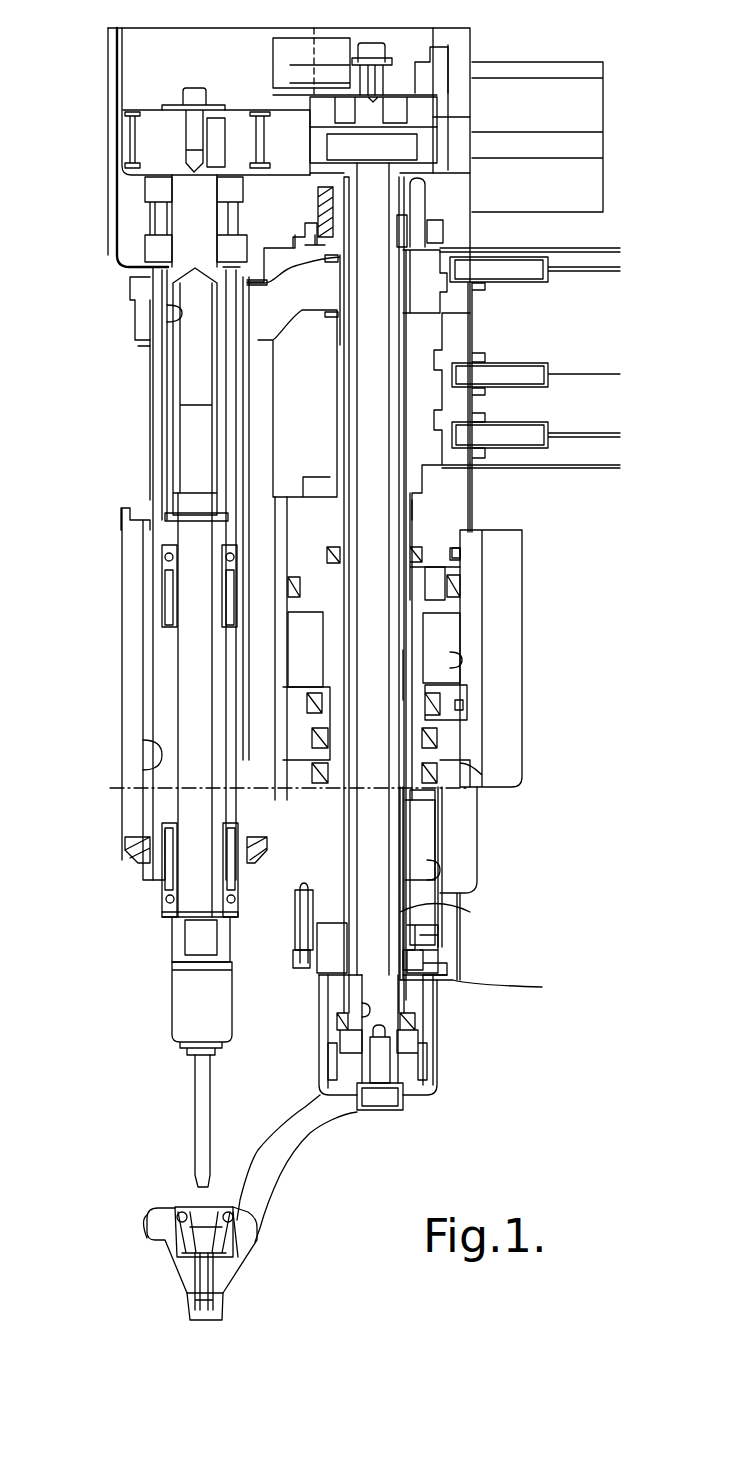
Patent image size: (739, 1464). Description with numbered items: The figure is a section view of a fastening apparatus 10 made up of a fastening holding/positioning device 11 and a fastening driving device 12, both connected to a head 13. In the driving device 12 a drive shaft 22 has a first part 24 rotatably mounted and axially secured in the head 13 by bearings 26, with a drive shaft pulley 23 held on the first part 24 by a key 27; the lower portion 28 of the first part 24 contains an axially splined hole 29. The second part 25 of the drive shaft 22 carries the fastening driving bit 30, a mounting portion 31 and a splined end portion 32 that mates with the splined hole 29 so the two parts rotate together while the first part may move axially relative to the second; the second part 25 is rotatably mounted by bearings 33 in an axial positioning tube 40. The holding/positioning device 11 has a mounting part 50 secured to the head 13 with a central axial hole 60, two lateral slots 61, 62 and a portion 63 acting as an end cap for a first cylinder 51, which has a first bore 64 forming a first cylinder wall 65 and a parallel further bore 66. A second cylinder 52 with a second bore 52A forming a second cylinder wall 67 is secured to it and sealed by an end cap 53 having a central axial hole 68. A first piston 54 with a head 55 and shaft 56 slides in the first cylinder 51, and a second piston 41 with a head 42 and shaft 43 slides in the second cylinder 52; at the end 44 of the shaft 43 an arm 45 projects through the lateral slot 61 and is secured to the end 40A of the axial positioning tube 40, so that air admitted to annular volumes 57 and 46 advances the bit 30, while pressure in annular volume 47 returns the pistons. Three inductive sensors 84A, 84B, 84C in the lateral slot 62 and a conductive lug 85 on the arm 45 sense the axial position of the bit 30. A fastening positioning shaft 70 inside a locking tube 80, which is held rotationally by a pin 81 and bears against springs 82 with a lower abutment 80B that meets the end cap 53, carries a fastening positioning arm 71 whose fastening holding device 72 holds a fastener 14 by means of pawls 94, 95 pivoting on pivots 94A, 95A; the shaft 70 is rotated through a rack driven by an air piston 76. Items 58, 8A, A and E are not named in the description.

The fastening apparatus 10 is at (503, 1007).
The fastening holding/positioning device 11 is at (452, 1093).
The fastening driving device 12 is at (156, 1010).
The head 13 is at (478, 27).
The fastener 14 is at (200, 1260).
The drive shaft 22 is at (148, 382).
The drive shaft pulley 23 is at (145, 130).
The first part 24 is at (182, 215).
The second part 25 is at (188, 682).
The bearings 26 is at (152, 190).
The key 27 is at (210, 127).
The lower portion 28 is at (150, 413).
The axially splined hole 29 is at (173, 315).
The fastening driving bit 30 is at (202, 1095).
The mounting portion 31 is at (190, 715).
The splined end portion 32 is at (192, 443).
The bearings 33 is at (163, 566).
The axial positioning tube 40 is at (153, 479).
The end of axial positioning tube 40A is at (140, 347).
The second piston 41 is at (470, 720).
The head 42 is at (480, 760).
The shaft 43 is at (403, 668).
The end 44 is at (403, 323).
The arm 45 is at (290, 312).
The annular volume 46 is at (287, 717).
The annular volume 47 is at (420, 885).
The mounting part 50 is at (460, 327).
The first cylinder 51 is at (473, 608).
The second cylinder 52 is at (447, 830).
The second bore 52A is at (420, 807).
The end cap 53 is at (445, 960).
The first piston 54 is at (432, 575).
The head 55 is at (433, 595).
The shaft 56 is at (425, 637).
The annular volume 57 is at (200, 585).
The bearing 58 is at (470, 692).
The central axial hole 60 is at (473, 500).
The lateral slot 61 is at (202, 429).
The lateral slot 62 is at (462, 345).
The portion 63 is at (420, 520).
The first bore 64 is at (303, 645).
The first cylinder wall 65 is at (450, 660).
The further bore 66 is at (148, 765).
The second cylinder wall 67 is at (427, 868).
The central axial hole 68 is at (402, 912).
The fastening positioning shaft 70 is at (370, 1010).
The fastening positioning arm 71 is at (307, 1128).
The fastening holding device 72 is at (260, 1259).
The air piston 76 is at (578, 112).
The locking tube 80 is at (400, 845).
The lower abutment 80B is at (492, 985).
The pin 81 is at (418, 210).
The springs 82 is at (317, 200).
The inductive sensor 84A is at (550, 263).
The inductive sensor 84B is at (537, 375).
The inductive sensor 84C is at (552, 425).
The conductive lug 85 is at (547, 253).
The shaft 8A is at (450, 243).
The pawl 94 is at (188, 1240).
The pivot 94A is at (175, 1203).
The pawl 95 is at (247, 1217).
The pivot 95A is at (240, 1222).
The direction A is at (314, 0).
The eccentricity E is at (206, 1203).